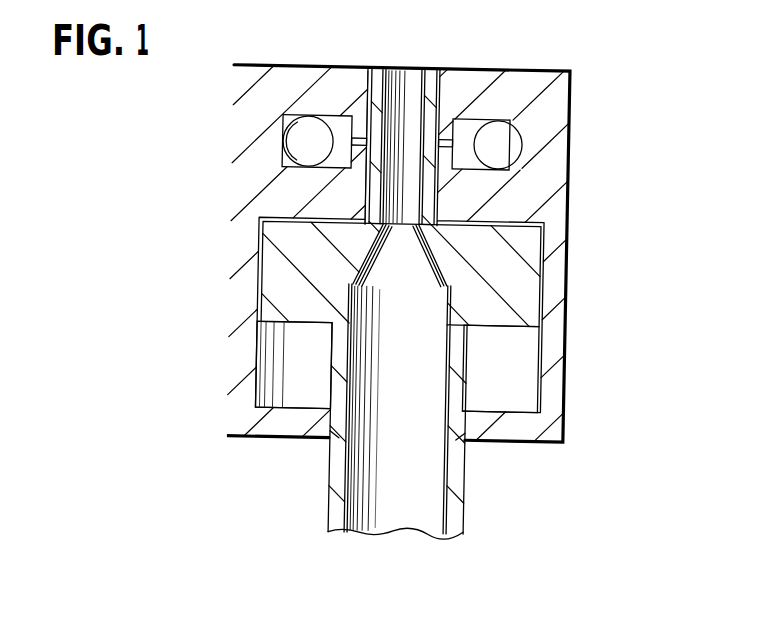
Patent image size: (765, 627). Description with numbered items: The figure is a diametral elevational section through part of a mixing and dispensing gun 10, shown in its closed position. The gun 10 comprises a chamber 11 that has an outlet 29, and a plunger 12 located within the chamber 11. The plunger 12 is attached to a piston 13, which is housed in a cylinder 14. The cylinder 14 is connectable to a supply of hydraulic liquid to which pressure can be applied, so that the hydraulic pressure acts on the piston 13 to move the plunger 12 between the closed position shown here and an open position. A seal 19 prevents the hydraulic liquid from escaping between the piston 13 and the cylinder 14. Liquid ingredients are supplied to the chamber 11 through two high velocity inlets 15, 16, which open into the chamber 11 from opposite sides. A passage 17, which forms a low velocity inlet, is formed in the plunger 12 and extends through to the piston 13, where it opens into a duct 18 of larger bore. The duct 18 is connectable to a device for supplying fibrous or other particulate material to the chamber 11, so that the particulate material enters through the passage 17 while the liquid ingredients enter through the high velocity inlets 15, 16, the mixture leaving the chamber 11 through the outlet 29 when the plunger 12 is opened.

The gun 10 is at (520, 95).
The chamber 11 is at (365, 107).
The plunger 12 is at (377, 198).
The piston 13 is at (317, 262).
The cylinder 14 is at (308, 377).
The high velocity inlet 15 is at (347, 138).
The high velocity inlet 16 is at (445, 150).
The passage 17 is at (403, 210).
The duct 18 is at (402, 352).
The seal 19 is at (467, 430).
The outlet 29 is at (402, 66).